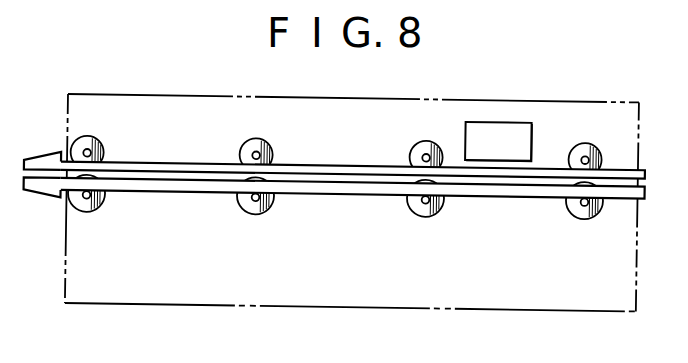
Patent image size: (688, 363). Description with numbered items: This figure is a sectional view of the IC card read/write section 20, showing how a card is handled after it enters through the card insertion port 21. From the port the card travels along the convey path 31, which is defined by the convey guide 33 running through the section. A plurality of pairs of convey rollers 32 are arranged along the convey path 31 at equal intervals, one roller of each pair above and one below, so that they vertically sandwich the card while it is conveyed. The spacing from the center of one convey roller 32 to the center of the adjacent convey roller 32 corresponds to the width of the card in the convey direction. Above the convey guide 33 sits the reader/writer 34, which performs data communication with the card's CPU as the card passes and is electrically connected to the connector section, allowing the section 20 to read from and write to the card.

The IC card read/write section 20 is at (323, 306).
The card insertion port 21 is at (43, 155).
The convey path 31 is at (173, 160).
The convey rollers 32 is at (100, 140).
The convey guide 33 is at (338, 159).
The reader/writer 34 is at (535, 123).